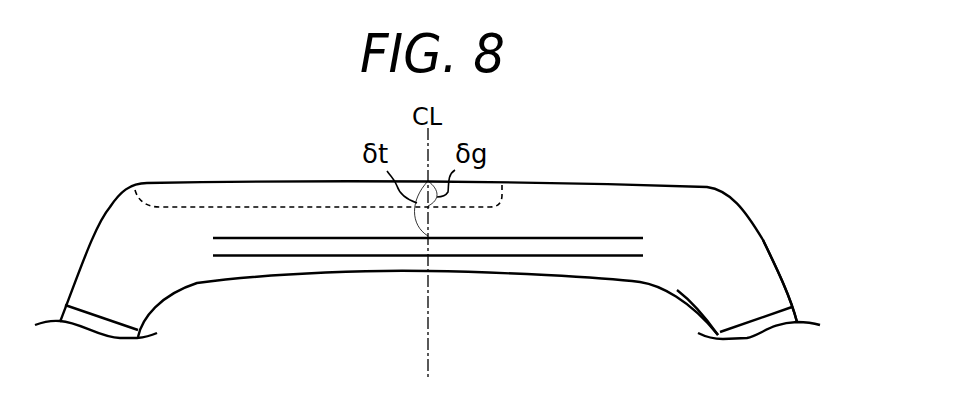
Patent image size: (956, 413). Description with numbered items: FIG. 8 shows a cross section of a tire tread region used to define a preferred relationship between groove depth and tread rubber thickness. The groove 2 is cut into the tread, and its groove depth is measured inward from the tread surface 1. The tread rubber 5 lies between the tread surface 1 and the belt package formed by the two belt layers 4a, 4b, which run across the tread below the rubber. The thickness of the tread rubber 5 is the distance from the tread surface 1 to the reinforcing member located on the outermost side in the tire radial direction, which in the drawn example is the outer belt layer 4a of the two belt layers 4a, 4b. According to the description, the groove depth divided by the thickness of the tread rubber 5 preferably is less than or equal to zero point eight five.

The tread surface 1 is at (592, 180).
The groove 2 is at (280, 193).
The belt layer 4a is at (632, 237).
The belt layer 4b is at (632, 257).
The tread rubber 5 is at (750, 255).